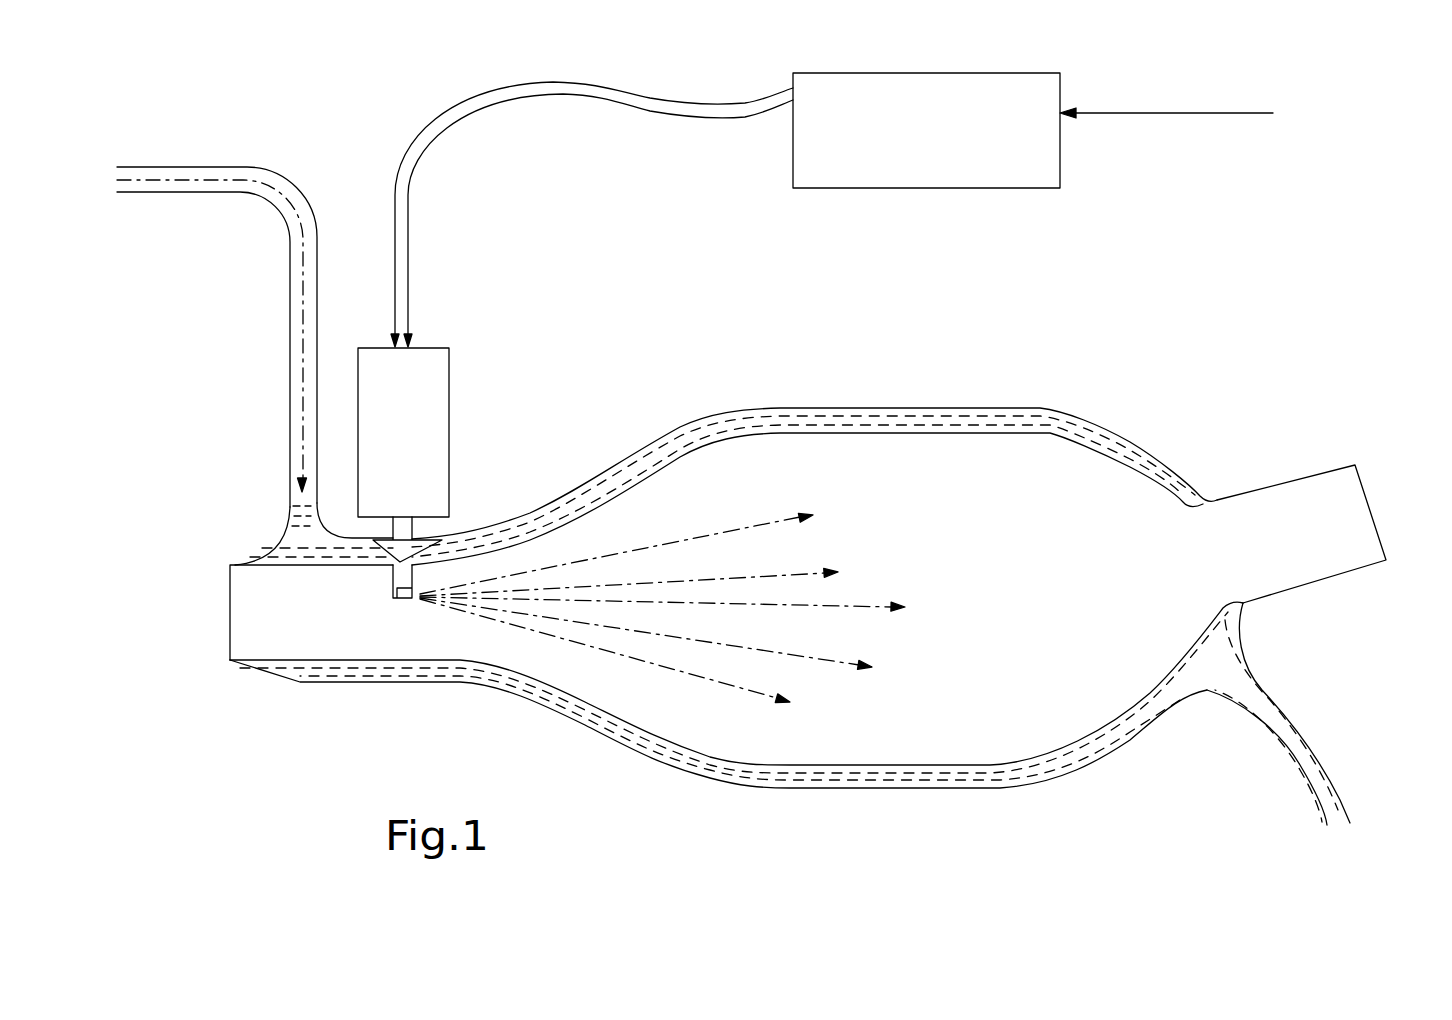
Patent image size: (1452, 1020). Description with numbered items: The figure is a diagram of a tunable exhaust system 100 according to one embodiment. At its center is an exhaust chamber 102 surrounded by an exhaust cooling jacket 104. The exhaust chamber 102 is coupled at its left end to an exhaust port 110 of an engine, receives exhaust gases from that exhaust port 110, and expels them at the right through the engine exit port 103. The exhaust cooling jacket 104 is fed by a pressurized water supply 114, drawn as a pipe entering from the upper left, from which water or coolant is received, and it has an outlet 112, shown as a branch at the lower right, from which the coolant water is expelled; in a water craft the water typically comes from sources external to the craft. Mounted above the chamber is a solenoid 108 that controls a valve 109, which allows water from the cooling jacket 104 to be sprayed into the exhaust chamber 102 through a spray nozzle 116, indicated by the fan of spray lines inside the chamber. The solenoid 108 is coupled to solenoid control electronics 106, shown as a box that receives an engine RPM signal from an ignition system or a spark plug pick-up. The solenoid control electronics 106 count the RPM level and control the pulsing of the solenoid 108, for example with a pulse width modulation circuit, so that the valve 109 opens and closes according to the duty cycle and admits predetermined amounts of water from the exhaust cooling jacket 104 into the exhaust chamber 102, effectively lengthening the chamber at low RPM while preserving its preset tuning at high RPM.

The tunable exhaust system 100 is at (1286, 303).
The exhaust chamber 102 is at (828, 731).
The engine exit port 103 is at (1338, 575).
The exhaust cooling jacket 104 is at (1130, 440).
The solenoid control electronics 106 is at (950, 188).
The solenoid 108 is at (428, 347).
The valve 109 is at (407, 550).
The exhaust port 110 is at (250, 612).
The outlet 112 is at (1277, 698).
The pressurized water supply 114 is at (305, 190).
The spray nozzle 116 is at (392, 590).